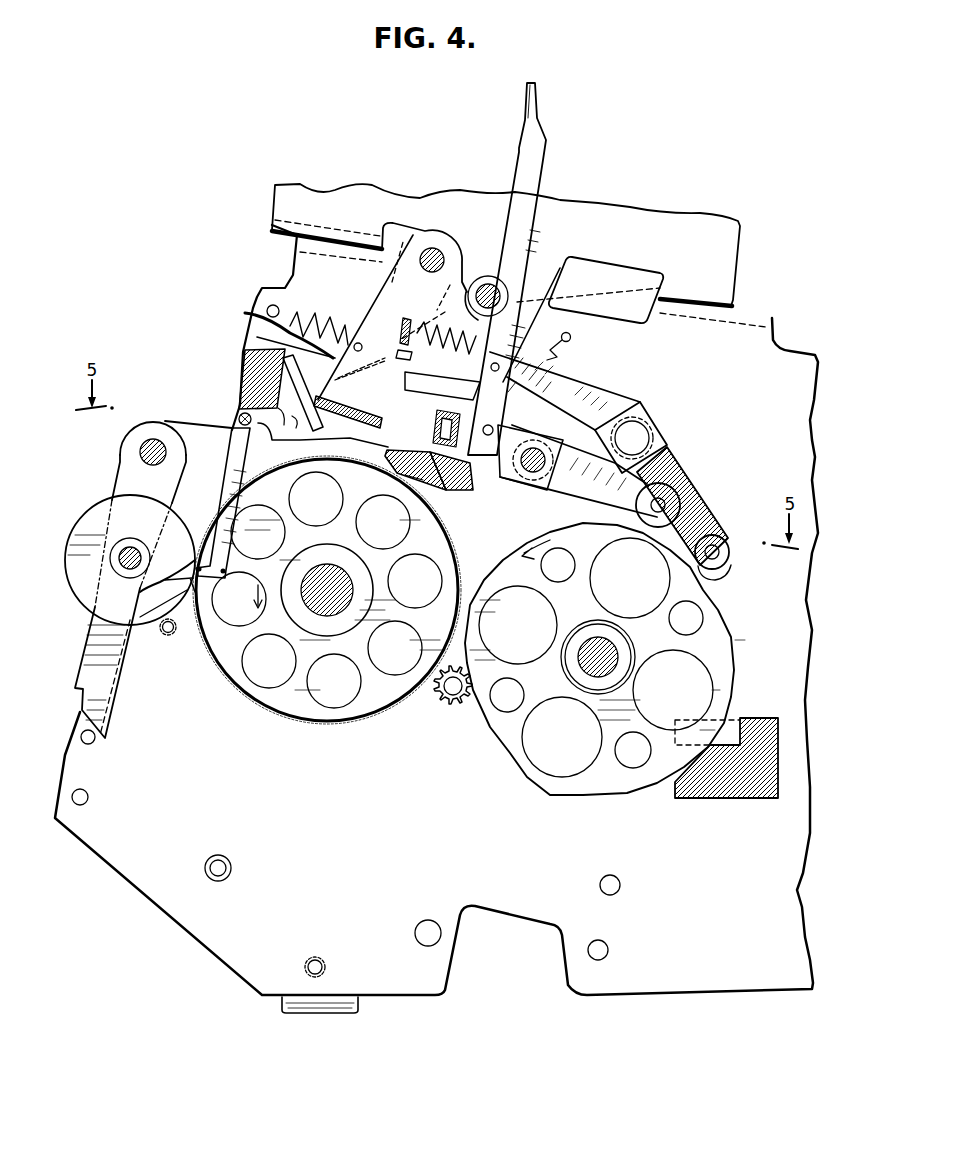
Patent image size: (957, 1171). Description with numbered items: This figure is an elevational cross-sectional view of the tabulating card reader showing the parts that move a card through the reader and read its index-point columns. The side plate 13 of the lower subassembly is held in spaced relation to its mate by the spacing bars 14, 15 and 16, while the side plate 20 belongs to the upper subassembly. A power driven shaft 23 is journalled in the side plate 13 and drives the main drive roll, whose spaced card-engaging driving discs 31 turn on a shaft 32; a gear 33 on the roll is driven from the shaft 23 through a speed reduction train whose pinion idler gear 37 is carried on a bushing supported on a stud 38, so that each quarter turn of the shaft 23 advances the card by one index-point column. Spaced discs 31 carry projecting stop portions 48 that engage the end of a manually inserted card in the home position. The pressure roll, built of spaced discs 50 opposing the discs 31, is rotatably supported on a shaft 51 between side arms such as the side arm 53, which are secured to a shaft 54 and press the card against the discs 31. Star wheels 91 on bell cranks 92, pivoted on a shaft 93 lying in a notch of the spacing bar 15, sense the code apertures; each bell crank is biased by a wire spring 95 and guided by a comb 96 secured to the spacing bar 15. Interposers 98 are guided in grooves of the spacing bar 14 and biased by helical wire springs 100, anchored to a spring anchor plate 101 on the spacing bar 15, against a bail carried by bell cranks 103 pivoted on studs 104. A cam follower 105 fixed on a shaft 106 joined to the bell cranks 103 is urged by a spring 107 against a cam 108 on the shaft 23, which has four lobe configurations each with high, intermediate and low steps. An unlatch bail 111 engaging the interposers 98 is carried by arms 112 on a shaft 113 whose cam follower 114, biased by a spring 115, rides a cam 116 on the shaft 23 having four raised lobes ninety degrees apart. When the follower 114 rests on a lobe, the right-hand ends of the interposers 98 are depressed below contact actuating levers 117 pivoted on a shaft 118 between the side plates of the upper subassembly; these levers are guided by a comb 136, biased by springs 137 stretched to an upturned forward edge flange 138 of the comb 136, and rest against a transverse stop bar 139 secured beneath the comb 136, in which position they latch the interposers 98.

The side plate 13 is at (186, 904).
The spacing bar 14 is at (442, 498).
The spacing bar 15 is at (257, 353).
The spacing bar 16 is at (728, 800).
The side plate 20 is at (728, 254).
The power driven shaft 23 is at (605, 640).
The card-engaging driving discs 31 is at (288, 706).
The shaft 32 is at (325, 598).
The gear 33 is at (404, 705).
The pinion idler gear 37 is at (447, 708).
The stud 38 is at (462, 682).
The projecting stop portions 48 is at (197, 605).
The discs 50 is at (100, 508).
The shaft 51 is at (134, 546).
The side arm 53 is at (84, 642).
The shaft 54 is at (153, 438).
The star wheel 91 is at (210, 578).
The bell crank 92 is at (225, 468).
The shaft 93 is at (240, 414).
The wire spring 95 is at (272, 428).
The comb 96 is at (296, 364).
The interposers 98 is at (470, 490).
The helical wire spring 100 is at (392, 381).
The spring anchor plate 101 is at (247, 314).
The bell crank 103 is at (606, 396).
The stud 104 is at (436, 248).
The cam follower 105 is at (677, 469).
The shaft 106 is at (640, 437).
The spring 107 is at (307, 320).
The cam 108 is at (712, 576).
The unlatch bail 111 is at (420, 495).
The arms 112 is at (490, 478).
The shaft 113 is at (535, 474).
The cam follower 114 is at (584, 496).
The spring 115 is at (558, 356).
The cam 116 is at (597, 785).
The contact actuating lever 117 is at (541, 152).
The shaft 118 is at (502, 287).
The comb 136 is at (541, 394).
The spring 137 is at (452, 342).
The upturned forward edge flange 138 is at (404, 327).
The transverse stop bar 139 is at (399, 352).